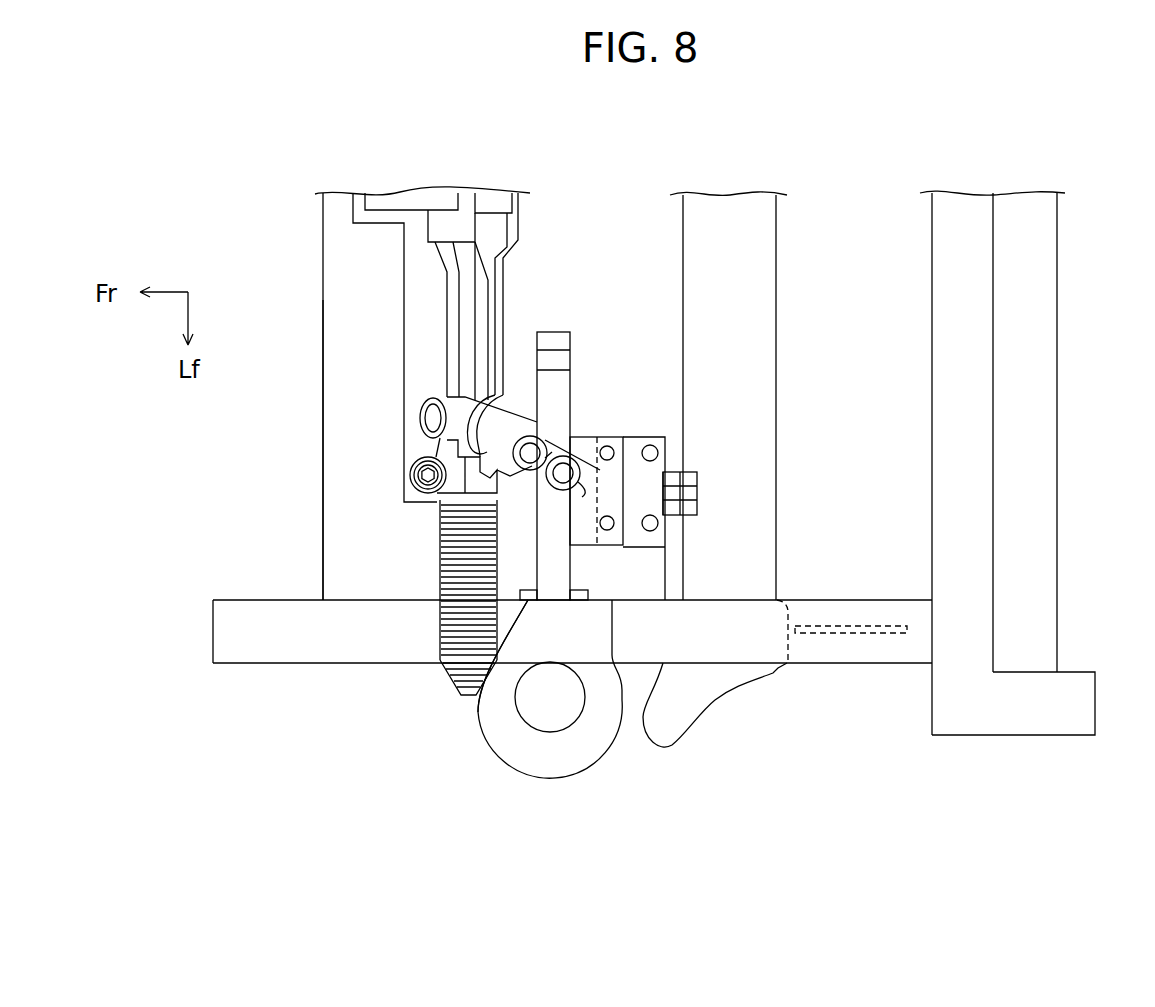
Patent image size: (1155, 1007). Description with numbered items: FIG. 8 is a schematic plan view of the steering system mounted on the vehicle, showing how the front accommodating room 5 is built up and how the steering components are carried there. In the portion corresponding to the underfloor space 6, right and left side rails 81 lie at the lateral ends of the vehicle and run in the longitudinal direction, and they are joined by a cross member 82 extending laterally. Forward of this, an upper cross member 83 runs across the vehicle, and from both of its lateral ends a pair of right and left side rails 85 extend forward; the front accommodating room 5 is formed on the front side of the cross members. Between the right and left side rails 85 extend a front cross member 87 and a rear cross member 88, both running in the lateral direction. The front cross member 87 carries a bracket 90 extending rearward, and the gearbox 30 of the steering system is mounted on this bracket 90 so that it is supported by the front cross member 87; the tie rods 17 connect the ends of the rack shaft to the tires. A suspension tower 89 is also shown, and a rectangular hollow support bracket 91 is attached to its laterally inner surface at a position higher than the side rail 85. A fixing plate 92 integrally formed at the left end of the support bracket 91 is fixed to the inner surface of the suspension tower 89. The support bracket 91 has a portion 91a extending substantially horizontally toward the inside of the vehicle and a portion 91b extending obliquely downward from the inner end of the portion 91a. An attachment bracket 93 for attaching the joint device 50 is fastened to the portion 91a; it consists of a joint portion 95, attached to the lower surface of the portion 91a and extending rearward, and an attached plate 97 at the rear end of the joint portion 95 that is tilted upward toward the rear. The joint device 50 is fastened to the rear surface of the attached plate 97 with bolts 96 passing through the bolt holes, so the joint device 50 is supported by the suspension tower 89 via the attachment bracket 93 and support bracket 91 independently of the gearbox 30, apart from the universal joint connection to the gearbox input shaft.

The front accommodating room 5 is at (858, 297).
The underfloor space 6 is at (1104, 367).
The tie rod 17 is at (435, 550).
The gearbox 30 is at (462, 412).
The joint device 50 is at (676, 458).
The side rail 81 is at (1035, 712).
The cross member 82 is at (1035, 542).
The upper cross member 83 is at (952, 268).
The side rail 85 is at (278, 665).
The front cross member 87 is at (322, 448).
The rear cross member 88 is at (745, 395).
The suspension tower 89 is at (556, 755).
The bracket 90 is at (420, 297).
The support bracket 91 is at (590, 578).
The horizontal portion of support bracket 91a is at (556, 455).
The obliquely downward portion of support bracket 91b is at (500, 395).
The fixing plate 92 is at (532, 602).
The attachment bracket 93 is at (590, 446).
The joint portion 95 is at (572, 540).
The bolt 96 is at (660, 545).
The attached plate 97 is at (697, 492).